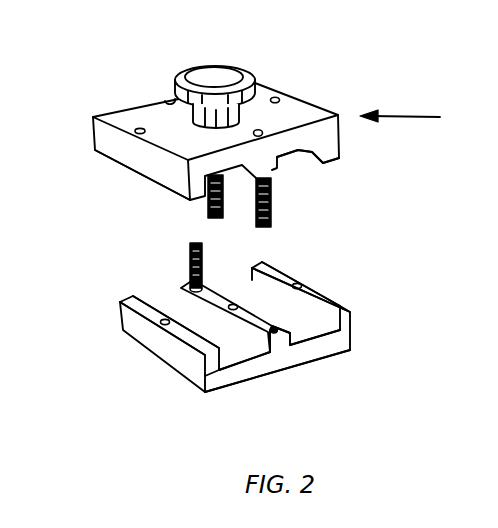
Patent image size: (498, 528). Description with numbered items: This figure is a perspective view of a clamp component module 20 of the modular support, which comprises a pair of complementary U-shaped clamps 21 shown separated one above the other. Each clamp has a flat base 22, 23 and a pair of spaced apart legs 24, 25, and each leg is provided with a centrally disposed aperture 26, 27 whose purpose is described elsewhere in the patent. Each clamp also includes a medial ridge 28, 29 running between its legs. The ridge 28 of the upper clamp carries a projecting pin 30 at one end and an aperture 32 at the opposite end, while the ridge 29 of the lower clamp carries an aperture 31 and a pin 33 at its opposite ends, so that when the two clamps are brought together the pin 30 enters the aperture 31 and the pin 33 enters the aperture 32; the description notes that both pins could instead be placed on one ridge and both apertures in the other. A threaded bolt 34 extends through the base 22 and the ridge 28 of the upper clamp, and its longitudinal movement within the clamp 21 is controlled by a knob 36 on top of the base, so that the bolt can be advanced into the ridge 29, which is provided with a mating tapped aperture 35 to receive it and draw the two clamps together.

The clamp component module 20 is at (417, 115).
The complementary U-shaped clamp 21 is at (290, 117).
The flat base 22 is at (300, 103).
The flat base 23 is at (250, 380).
The leg 24 is at (172, 170).
The leg 25 is at (338, 320).
The aperture 26 is at (135, 131).
The aperture 27 is at (300, 284).
The medial ridge 28 is at (277, 170).
The medial ridge 29 is at (292, 346).
The projecting pin 30 is at (273, 207).
The aperture 31 is at (275, 333).
The aperture 32 is at (168, 98).
The pin 33 is at (189, 262).
The threaded bolt 34 is at (210, 210).
The tapped aperture 35 is at (233, 304).
The knob 36 is at (216, 74).